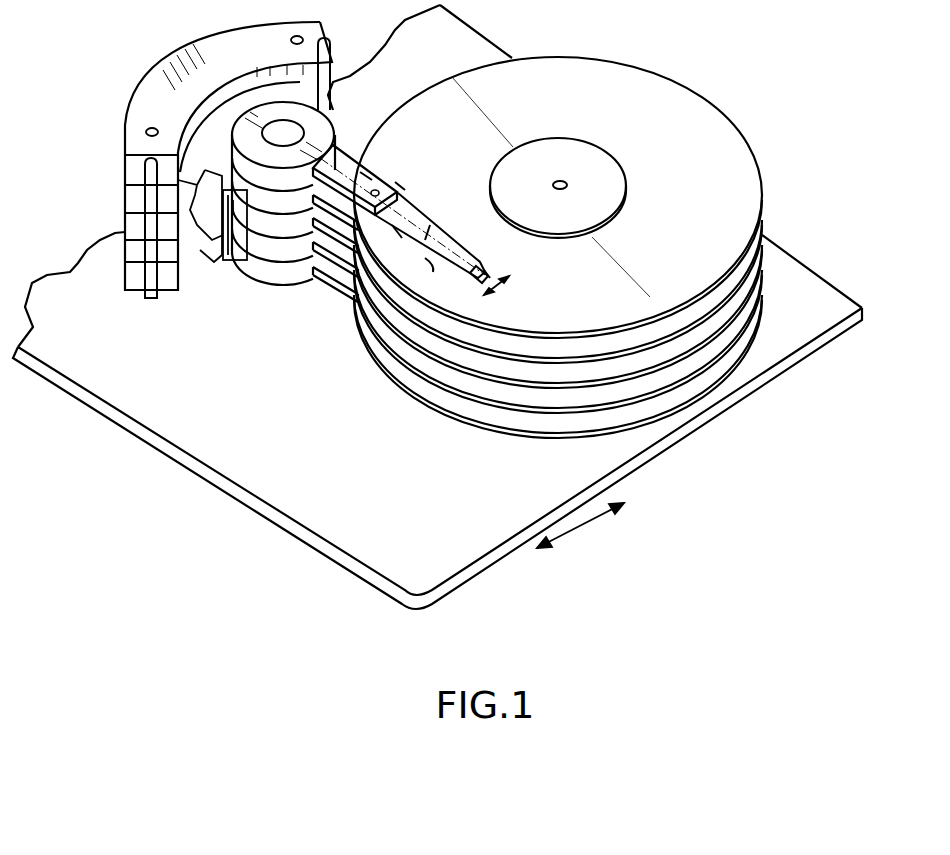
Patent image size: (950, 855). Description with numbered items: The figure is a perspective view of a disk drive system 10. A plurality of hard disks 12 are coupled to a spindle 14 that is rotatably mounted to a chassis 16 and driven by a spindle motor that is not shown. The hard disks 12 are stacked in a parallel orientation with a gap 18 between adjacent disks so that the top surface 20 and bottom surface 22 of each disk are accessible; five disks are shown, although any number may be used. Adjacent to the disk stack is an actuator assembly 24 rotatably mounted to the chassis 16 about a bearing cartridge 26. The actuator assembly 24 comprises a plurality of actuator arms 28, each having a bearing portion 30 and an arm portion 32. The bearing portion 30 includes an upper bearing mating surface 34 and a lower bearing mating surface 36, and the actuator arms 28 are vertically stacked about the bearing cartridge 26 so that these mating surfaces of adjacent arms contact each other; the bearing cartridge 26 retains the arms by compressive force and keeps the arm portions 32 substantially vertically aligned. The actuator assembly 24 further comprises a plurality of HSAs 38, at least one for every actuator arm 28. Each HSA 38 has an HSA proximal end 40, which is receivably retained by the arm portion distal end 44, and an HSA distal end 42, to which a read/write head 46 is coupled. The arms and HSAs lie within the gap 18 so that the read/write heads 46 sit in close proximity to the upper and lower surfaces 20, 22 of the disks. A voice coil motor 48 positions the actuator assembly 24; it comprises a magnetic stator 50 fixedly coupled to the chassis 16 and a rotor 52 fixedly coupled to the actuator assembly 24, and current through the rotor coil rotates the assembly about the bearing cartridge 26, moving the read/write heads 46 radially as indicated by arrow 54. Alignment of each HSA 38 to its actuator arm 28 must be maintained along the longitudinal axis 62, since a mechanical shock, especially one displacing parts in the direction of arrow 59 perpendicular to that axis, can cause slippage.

The disk drive system 10 is at (216, 588).
The hard disks 12 is at (680, 95).
The spindle 14 is at (549, 168).
The chassis 16 is at (180, 460).
The gap 18 is at (590, 345).
The top surface 20 is at (692, 232).
The bottom surface 22 is at (612, 330).
The actuator assembly 24 is at (391, 205).
The bearing cartridge 26 is at (285, 128).
The actuator arms 28 is at (337, 142).
The bearing portion 30 is at (338, 115).
The arm portion 32 is at (365, 172).
The upper bearing mating surface 34 is at (250, 118).
The lower bearing mating surface 36 is at (234, 295).
The HSA 38 is at (428, 218).
The HSA proximal end 40 is at (415, 200).
The HSA distal end 42 is at (465, 256).
The arm portion distal end 44 is at (400, 185).
The read/write head 46 is at (488, 275).
The voice coil motor 48 is at (150, 62).
The magnetic stator 50 is at (130, 175).
The rotor 52 is at (212, 232).
The arrow 54 is at (505, 290).
The arrow 59 is at (580, 530).
The longitudinal axis 62 is at (440, 276).